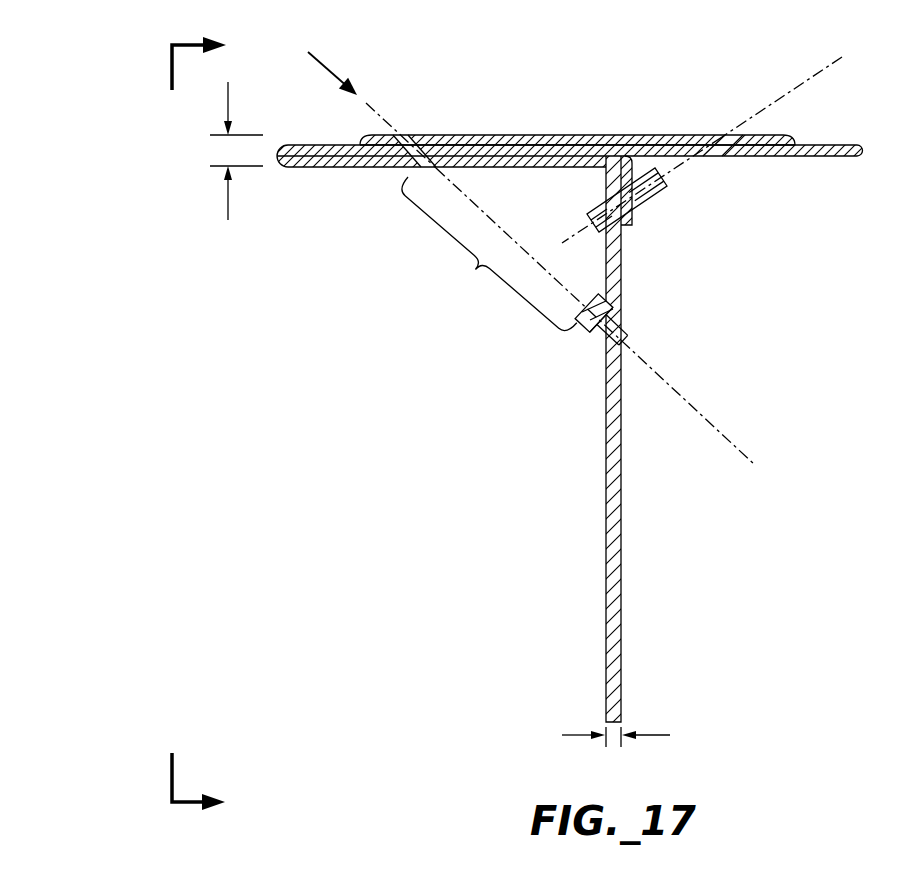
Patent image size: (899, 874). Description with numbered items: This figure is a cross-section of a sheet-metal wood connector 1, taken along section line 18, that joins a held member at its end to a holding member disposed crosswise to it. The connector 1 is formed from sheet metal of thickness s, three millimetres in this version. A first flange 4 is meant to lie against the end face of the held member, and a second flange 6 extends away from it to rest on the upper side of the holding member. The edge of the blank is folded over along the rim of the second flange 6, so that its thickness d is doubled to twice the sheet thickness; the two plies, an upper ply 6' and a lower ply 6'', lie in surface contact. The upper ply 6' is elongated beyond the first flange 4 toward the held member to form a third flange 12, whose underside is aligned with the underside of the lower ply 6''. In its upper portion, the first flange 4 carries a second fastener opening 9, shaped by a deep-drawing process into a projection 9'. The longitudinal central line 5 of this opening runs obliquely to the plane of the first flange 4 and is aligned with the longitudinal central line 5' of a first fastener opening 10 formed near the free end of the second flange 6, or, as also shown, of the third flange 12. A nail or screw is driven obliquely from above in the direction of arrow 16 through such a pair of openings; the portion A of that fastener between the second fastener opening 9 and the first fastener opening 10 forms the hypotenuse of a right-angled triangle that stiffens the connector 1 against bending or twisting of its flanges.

The connector 1 is at (564, 401).
The first flange 4 is at (623, 583).
The longitudinal central line 5 is at (611, 301).
The longitudinal central line 5' is at (604, 112).
The second flange 6 is at (577, 113).
The upper ply 6' is at (434, 129).
The lower ply 6'' is at (447, 189).
The second fastener opening 9 is at (569, 320).
The projection 9' is at (586, 343).
The first fastener opening 10 is at (413, 135).
The third flange 12 is at (785, 124).
The arrow 16 is at (330, 68).
The section line 18 is at (218, 425).
The portion of fastener A is at (484, 259).
The thickness d is at (222, 150).
The thickness s is at (612, 745).